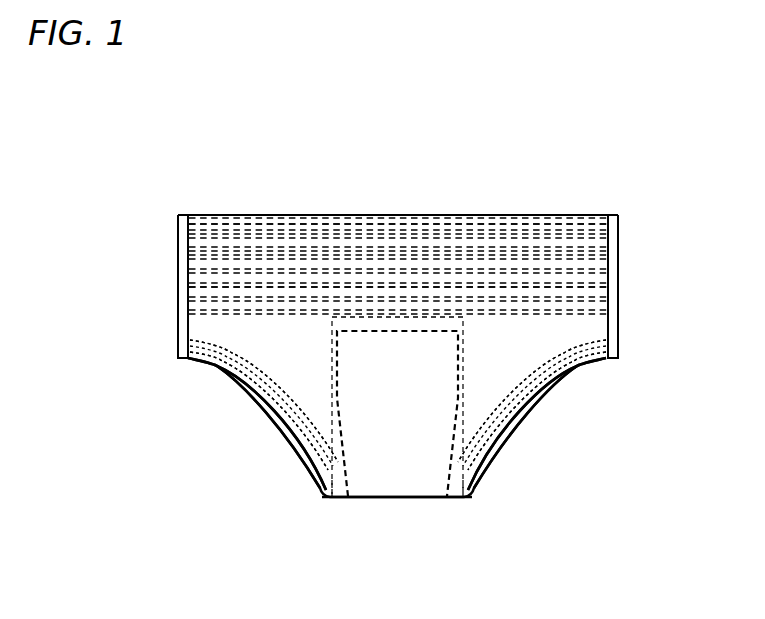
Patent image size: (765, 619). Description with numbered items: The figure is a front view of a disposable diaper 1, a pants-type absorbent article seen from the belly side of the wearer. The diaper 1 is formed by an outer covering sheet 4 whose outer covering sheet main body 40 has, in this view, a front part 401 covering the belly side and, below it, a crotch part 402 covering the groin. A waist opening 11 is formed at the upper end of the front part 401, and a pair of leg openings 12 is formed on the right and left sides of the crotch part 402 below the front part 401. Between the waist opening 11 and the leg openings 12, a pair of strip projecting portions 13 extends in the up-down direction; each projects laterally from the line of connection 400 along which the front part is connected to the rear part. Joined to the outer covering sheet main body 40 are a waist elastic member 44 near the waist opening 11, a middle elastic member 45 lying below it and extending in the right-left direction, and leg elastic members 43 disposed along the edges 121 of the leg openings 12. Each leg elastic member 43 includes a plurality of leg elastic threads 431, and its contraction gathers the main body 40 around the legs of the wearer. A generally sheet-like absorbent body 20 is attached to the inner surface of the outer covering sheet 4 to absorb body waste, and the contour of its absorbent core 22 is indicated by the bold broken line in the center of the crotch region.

The disposable diaper 1 is at (142, 130).
The outer covering sheet 4 is at (105, 350).
The outer covering sheet main body 40 is at (217, 325).
The line of connection 400 is at (188, 213).
The front part 401 is at (381, 240).
The crotch part 402 is at (406, 472).
The waist opening 11 is at (298, 213).
The leg openings 12 is at (255, 403).
The edges of the leg openings 121 is at (286, 425).
The strip projecting portions 13 is at (176, 297).
The leg elastic members 43 is at (133, 397).
The leg elastic threads 431 is at (222, 387).
The waist elastic member 44 is at (531, 222).
The middle elastic member 45 is at (570, 292).
The absorbent body 20 is at (557, 506).
The absorbent core 22 is at (478, 492).